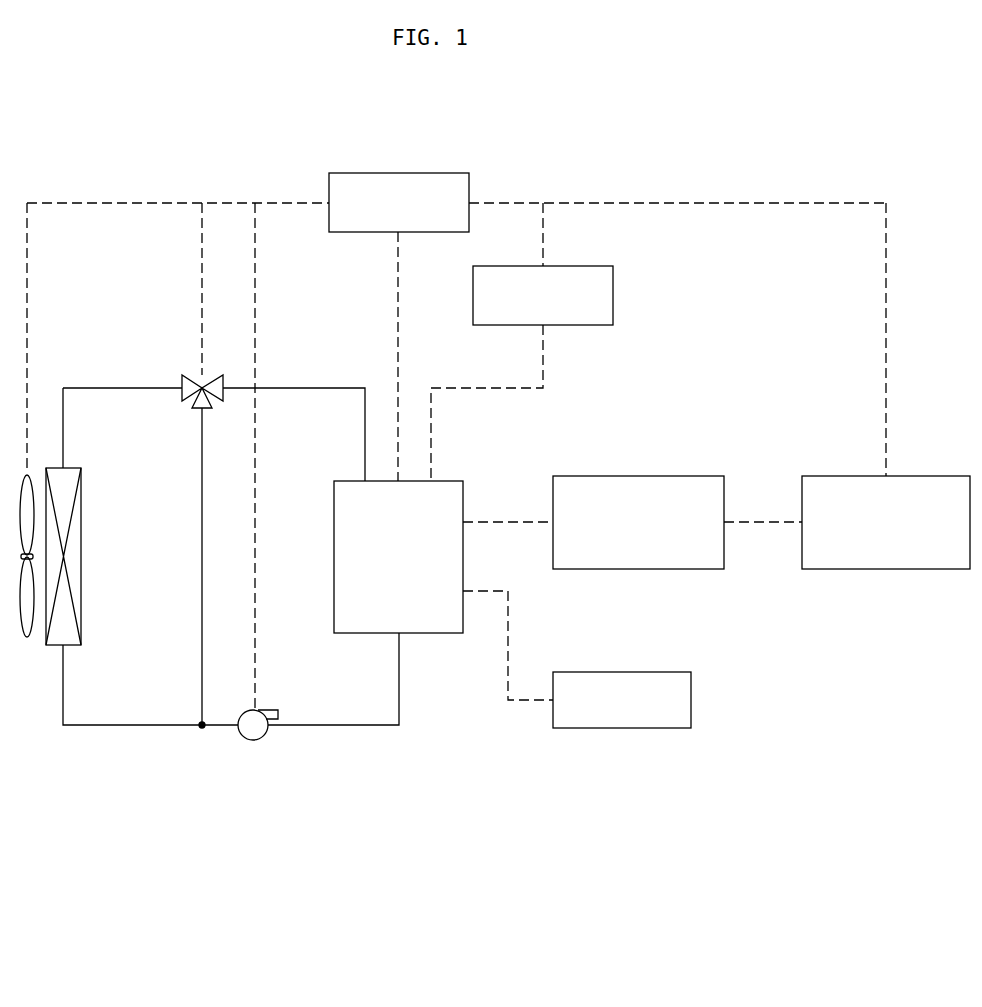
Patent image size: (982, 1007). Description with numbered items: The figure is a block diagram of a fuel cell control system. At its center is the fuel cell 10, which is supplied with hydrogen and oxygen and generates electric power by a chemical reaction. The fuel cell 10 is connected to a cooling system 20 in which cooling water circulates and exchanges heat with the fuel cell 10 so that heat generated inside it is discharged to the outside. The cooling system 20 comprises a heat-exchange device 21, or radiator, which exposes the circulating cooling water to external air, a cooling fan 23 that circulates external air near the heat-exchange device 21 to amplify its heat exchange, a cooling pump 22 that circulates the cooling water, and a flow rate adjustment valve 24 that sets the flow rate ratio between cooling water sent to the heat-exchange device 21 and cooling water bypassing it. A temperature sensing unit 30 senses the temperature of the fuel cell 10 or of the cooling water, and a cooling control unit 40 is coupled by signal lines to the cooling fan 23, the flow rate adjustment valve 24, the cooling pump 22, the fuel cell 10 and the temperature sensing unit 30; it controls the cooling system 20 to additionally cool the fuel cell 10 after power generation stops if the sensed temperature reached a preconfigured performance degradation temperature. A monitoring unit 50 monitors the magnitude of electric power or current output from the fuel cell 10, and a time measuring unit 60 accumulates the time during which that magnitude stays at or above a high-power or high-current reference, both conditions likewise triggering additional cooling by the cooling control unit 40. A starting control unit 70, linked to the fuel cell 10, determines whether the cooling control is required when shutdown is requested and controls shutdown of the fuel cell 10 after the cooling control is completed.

The fuel cell 10 is at (437, 635).
The cooling system 20 is at (153, 730).
The heat-exchange device 21 is at (73, 645).
The cooling pump 22 is at (253, 740).
The cooling fan 23 is at (27, 637).
The flow rate adjustment valve 24 is at (184, 377).
The temperature sensing unit 30 is at (613, 300).
The cooling control unit 40 is at (397, 173).
The monitoring unit 50 is at (656, 476).
The time measuring unit 60 is at (918, 476).
The starting control unit 70 is at (691, 700).